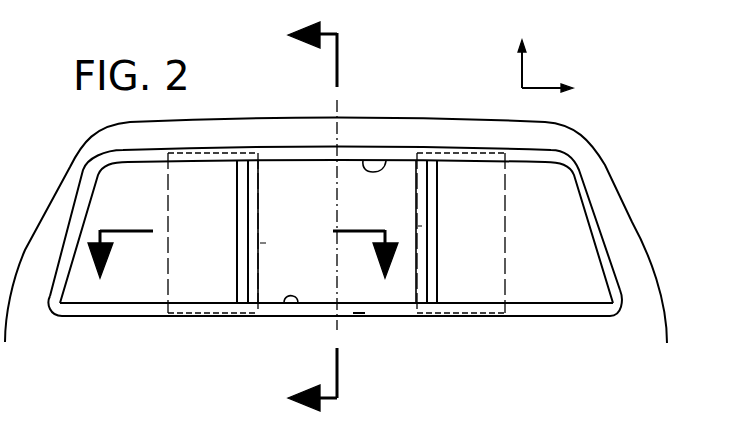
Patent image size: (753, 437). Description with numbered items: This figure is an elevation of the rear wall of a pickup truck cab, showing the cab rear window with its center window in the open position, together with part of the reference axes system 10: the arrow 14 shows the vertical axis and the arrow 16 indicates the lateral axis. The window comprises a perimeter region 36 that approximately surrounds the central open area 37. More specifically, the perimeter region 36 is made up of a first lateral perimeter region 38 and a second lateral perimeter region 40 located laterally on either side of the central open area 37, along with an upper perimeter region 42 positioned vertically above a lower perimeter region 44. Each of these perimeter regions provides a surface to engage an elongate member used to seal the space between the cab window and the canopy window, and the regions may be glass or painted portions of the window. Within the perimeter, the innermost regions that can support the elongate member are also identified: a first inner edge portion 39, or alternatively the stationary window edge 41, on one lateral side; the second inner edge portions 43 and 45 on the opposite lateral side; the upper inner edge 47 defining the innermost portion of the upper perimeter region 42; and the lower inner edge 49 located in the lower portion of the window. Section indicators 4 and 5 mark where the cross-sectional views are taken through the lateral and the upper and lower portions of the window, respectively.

The axes system 10 is at (552, 58).
The arrow 14 is at (521, 72).
The arrow 16 is at (548, 88).
The perimeter region 36 is at (382, 313).
The central open area 37 is at (318, 214).
The first lateral perimeter region 38 is at (245, 302).
The first inner edge portion 39 is at (260, 243).
The second lateral perimeter region 40 is at (430, 301).
The stationary window edge 41 is at (248, 207).
The upper perimeter region 42 is at (282, 152).
The second inner edge portion 43 is at (418, 193).
The lower perimeter region 44 is at (353, 313).
The second inner edge portion 45 is at (432, 228).
The upper inner edge 47 is at (380, 172).
The lower inner edge 49 is at (284, 303).
The section line 4- 4 is at (243, 267).
The section line 5- 5 is at (303, 217).